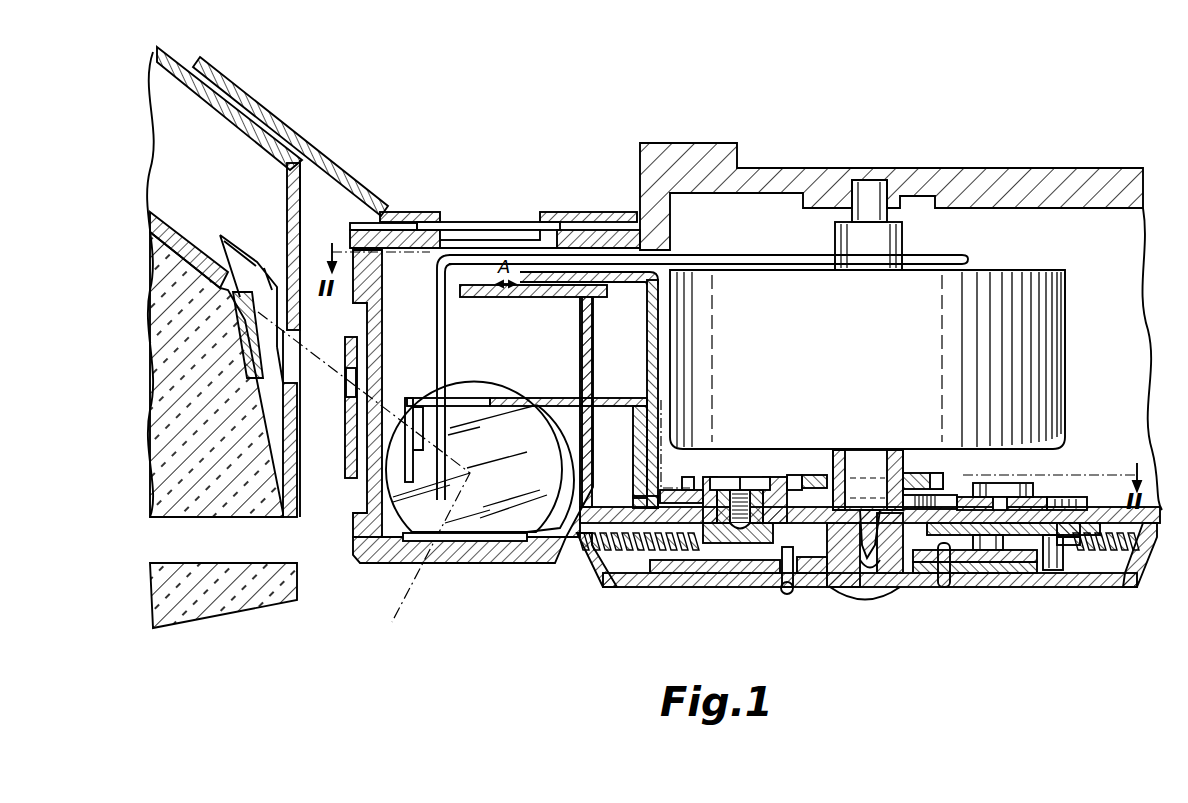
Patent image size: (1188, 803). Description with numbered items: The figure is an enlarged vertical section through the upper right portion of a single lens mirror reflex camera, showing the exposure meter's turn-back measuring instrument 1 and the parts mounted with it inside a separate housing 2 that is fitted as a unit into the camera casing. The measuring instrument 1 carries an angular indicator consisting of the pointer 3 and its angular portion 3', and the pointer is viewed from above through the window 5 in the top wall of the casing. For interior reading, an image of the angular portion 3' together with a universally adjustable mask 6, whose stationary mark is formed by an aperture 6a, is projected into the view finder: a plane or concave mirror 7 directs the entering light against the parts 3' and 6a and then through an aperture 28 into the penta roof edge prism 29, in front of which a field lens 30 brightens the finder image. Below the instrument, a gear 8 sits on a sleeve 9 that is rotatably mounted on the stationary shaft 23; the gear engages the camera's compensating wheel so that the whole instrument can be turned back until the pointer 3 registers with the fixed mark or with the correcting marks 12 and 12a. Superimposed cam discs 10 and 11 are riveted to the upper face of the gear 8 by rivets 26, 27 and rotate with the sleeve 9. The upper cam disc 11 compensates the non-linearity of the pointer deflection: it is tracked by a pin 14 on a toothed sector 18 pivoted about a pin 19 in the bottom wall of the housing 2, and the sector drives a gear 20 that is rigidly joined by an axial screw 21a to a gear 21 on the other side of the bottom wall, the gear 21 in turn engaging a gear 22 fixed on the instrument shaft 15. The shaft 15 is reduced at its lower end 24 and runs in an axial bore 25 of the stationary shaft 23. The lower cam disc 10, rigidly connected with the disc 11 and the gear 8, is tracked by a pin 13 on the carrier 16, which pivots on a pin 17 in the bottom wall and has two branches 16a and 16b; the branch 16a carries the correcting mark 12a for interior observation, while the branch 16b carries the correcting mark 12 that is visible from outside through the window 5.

The measuring instrument 1 is at (969, 292).
The housing 2 is at (1066, 178).
The instrument pointer 3 is at (708, 245).
The angular portion of the pointer 3' is at (424, 377).
The window 5 is at (453, 232).
The mask 6 is at (345, 462).
The aperture 6a is at (349, 393).
The mirror 7 is at (483, 525).
The gear 8 is at (592, 563).
The sleeve 9 is at (826, 582).
The cam disc 10 is at (667, 574).
The cam disc 11 is at (746, 545).
The correcting mark 12 is at (532, 275).
The correcting mark 12a is at (405, 470).
The tracking pin 13 is at (1055, 540).
The tracking pin 14 is at (993, 551).
The shaft 15 is at (905, 248).
The carrier 16 is at (1050, 503).
The branch 16a is at (535, 400).
The branch 16b is at (593, 272).
The pin 17 is at (996, 484).
The toothed sector 18 is at (1048, 573).
The pin 19 is at (1068, 545).
The gear 20 is at (723, 545).
The gear 21 is at (702, 476).
The axial screw 21a is at (742, 477).
The gear 22 is at (913, 478).
The stationary shaft 23 is at (857, 588).
The reduced lower end of the shaft 24 is at (872, 545).
The axial bore 25 is at (870, 558).
The rivet 26 is at (782, 588).
The rivet 27 is at (945, 580).
The aperture 28 is at (298, 370).
The penta roof edge prism 29 is at (157, 262).
The field lens 30 is at (226, 606).